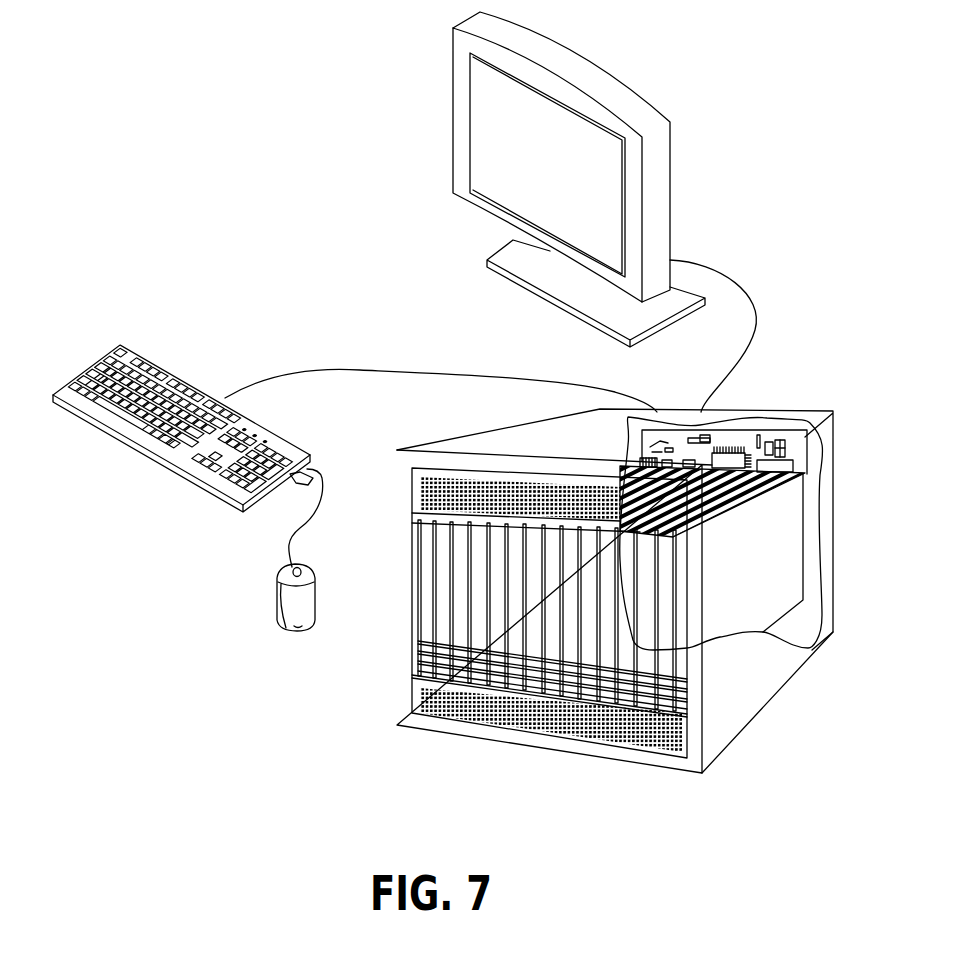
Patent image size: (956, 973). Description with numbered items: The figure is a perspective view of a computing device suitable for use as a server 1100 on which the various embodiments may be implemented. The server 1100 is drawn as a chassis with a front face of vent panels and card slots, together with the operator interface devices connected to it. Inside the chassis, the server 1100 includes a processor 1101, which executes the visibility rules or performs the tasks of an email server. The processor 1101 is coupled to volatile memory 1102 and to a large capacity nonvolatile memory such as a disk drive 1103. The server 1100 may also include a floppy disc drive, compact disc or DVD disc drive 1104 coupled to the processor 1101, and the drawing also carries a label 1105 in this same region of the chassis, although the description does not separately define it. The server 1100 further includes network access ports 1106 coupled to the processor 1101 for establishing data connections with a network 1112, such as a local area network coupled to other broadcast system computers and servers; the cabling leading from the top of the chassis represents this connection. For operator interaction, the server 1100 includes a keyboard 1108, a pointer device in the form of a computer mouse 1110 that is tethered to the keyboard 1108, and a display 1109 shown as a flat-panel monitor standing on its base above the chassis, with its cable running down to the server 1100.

The server 1100 is at (477, 435).
The processor 1101 is at (640, 460).
The volatile memory 1102 is at (793, 465).
The disk drive 1103 is at (460, 564).
The disc drive 1104 is at (423, 615).
The guide rail 1105 is at (442, 590).
The network access ports 1106 is at (733, 462).
The keyboard 1108 is at (178, 380).
The display 1109 is at (670, 207).
The computer mouse 1110 is at (283, 627).
The network 1112 is at (772, 430).